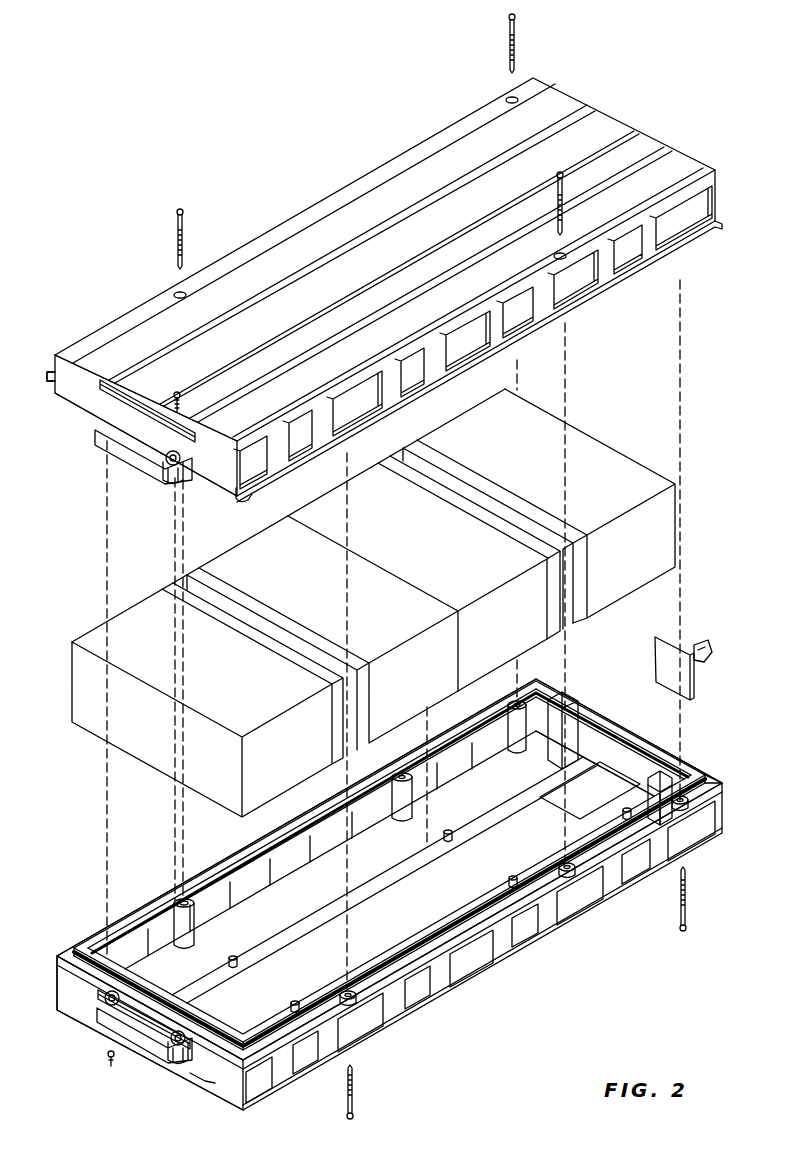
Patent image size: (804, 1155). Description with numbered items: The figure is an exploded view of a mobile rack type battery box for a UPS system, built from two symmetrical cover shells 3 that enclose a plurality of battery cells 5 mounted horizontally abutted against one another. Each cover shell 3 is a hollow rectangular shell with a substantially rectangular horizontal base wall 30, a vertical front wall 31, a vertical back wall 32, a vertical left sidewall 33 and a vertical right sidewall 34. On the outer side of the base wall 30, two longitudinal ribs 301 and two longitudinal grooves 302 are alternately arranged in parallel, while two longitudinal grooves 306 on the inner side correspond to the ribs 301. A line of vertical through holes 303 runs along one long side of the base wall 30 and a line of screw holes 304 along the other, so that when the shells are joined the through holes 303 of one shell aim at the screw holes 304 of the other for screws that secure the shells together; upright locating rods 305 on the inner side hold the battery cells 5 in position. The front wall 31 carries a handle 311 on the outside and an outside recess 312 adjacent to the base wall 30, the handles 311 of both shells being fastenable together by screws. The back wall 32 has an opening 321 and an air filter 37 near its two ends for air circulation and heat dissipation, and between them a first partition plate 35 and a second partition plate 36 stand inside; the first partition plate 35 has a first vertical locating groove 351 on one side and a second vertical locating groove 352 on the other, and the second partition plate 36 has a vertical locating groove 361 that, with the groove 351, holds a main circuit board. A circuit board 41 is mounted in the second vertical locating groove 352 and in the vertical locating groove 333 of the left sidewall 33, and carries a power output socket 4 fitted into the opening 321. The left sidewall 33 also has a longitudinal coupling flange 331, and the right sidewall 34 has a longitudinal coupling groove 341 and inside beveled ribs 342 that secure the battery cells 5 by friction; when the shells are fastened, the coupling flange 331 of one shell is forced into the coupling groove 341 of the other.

The cover shell 3 is at (253, 186).
The horizontal base wall 30 is at (353, 195).
The longitudinal ribs 301 is at (590, 163).
The longitudinal grooves 302 is at (667, 172).
The vertical through holes 303 is at (178, 290).
The screw holes 304 is at (183, 900).
The upright locating rods 305 is at (512, 875).
The longitudinal grooves 306 is at (277, 1020).
The vertical front wall 31 is at (88, 405).
The handle 311 is at (150, 458).
The outside recess 312 is at (131, 383).
The vertical back wall 32 is at (602, 713).
The opening 321 is at (688, 790).
The vertical left sidewall 33 is at (472, 978).
The longitudinal coupling flange 331 is at (52, 380).
The vertical locating groove 333 is at (700, 795).
The vertical right sidewall 34 is at (578, 293).
The longitudinal coupling groove 341 is at (238, 497).
The beveled ribs 342 is at (105, 985).
The first partition plate 35 is at (622, 812).
The first vertical locating groove 351 is at (660, 775).
The second vertical locating groove 352 is at (653, 788).
The second partition plate 36 is at (515, 771).
The vertical locating groove 361 is at (598, 740).
The air filter 37 is at (566, 700).
The power output socket 4 is at (700, 657).
The circuit board 41 is at (667, 660).
The battery cells 5 is at (90, 716).